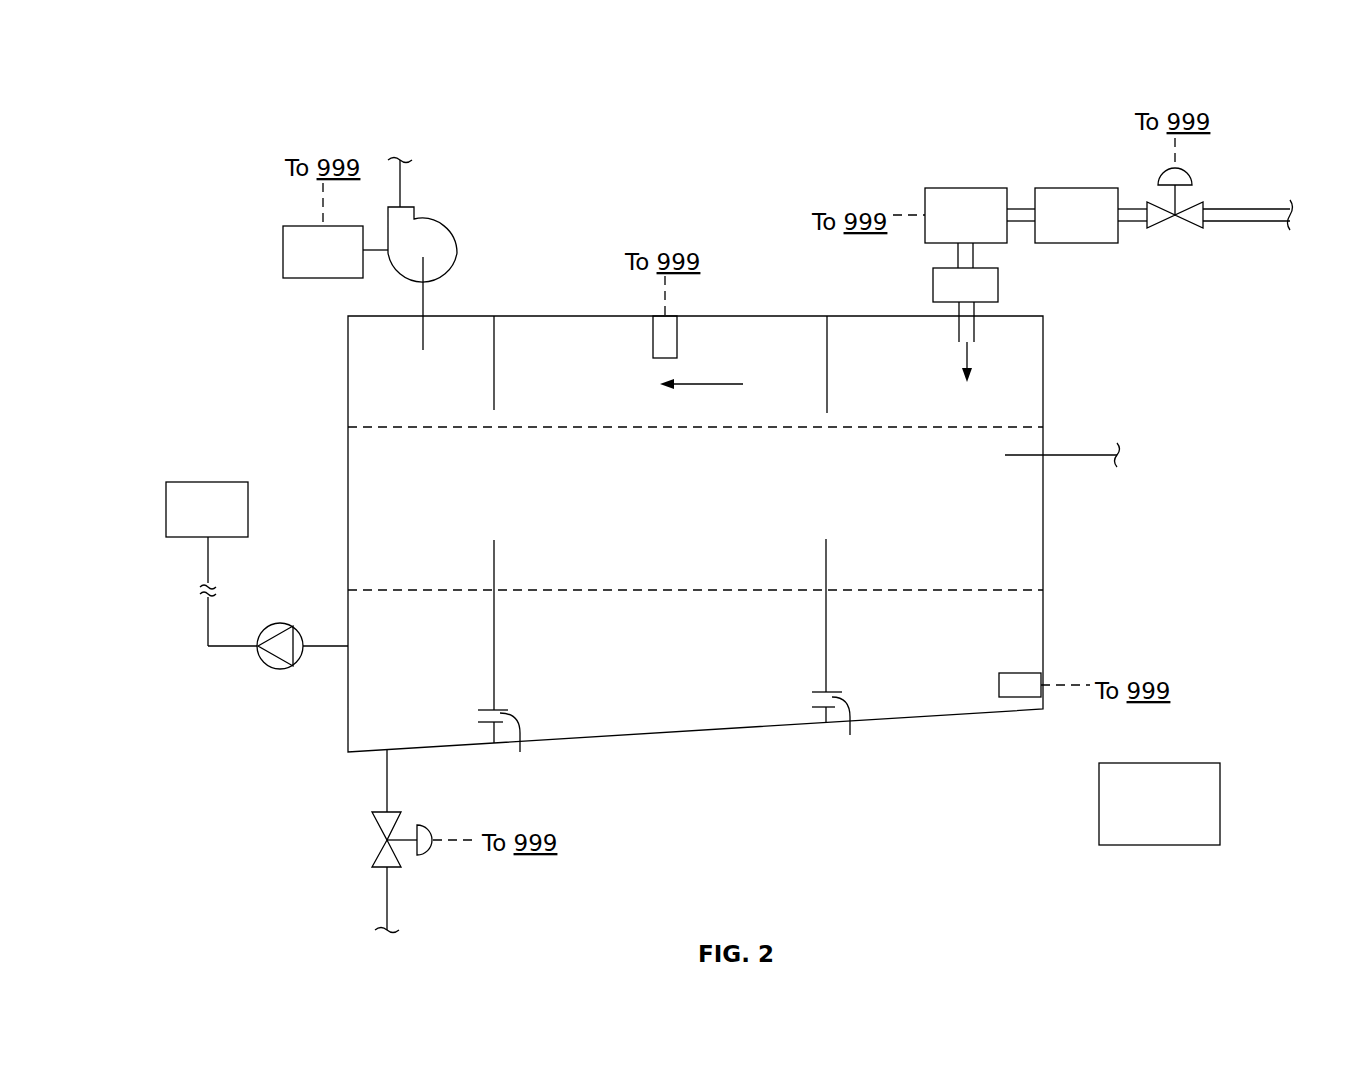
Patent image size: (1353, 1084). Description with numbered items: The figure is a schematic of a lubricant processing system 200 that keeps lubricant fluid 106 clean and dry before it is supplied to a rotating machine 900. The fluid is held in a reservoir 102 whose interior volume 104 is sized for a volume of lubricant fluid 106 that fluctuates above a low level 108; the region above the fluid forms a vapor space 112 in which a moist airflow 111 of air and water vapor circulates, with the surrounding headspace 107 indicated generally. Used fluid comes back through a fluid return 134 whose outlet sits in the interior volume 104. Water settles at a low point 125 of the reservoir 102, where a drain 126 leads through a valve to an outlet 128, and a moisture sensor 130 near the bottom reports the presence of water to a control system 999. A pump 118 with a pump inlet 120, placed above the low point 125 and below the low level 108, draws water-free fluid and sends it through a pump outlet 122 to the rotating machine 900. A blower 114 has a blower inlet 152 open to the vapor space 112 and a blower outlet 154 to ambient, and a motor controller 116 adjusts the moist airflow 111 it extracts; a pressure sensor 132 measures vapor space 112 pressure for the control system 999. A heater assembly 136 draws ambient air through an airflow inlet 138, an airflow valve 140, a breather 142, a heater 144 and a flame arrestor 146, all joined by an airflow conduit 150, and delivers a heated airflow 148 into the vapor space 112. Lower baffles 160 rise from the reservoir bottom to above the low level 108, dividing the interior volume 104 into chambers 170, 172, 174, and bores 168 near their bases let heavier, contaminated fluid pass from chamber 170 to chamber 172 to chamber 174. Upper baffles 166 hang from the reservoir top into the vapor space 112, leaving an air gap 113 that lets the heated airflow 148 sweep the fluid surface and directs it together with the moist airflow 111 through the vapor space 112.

The lubricant processing system 200 is at (202, 78).
The reservoir 102 is at (1052, 519).
The interior volume 104 is at (695, 473).
The lubricant fluid 106 is at (853, 597).
The headspace 107 is at (940, 425).
The low level 108 is at (965, 590).
The moist airflow 111 is at (725, 388).
The vapor space 112 is at (780, 337).
The air gap 113 is at (494, 422).
The blower 114 is at (440, 222).
The motor controller 116 is at (323, 252).
The pump 118 is at (277, 623).
The pump inlet 120 is at (330, 644).
The pump outlet 122 is at (230, 650).
The low point 125 is at (360, 748).
The drain 126 is at (388, 788).
The outlet 128 is at (388, 898).
The moisture sensor 130 is at (1020, 673).
The pressure sensor 132 is at (670, 337).
The fluid return 134 is at (1077, 453).
The heater assembly 136 is at (1043, 146).
The airflow inlet 138 is at (1250, 222).
The airflow valve 140 is at (1173, 222).
The breather 142 is at (1091, 215).
The heater 144 is at (966, 215).
The flame arrestor 146 is at (1000, 285).
The heated airflow 148 is at (970, 357).
The airflow conduit 150 is at (1027, 208).
The blower inlet 152 is at (426, 306).
The blower outlet 154 is at (403, 190).
The lower baffle 160 is at (494, 661).
The upper baffle 166 is at (494, 370).
The bore 168 is at (676, 739).
The chamber 170 is at (945, 669).
The chamber 172 is at (672, 659).
The chamber 174 is at (422, 657).
The rotating machine 900 is at (207, 509).
The control system 999 is at (1159, 804).